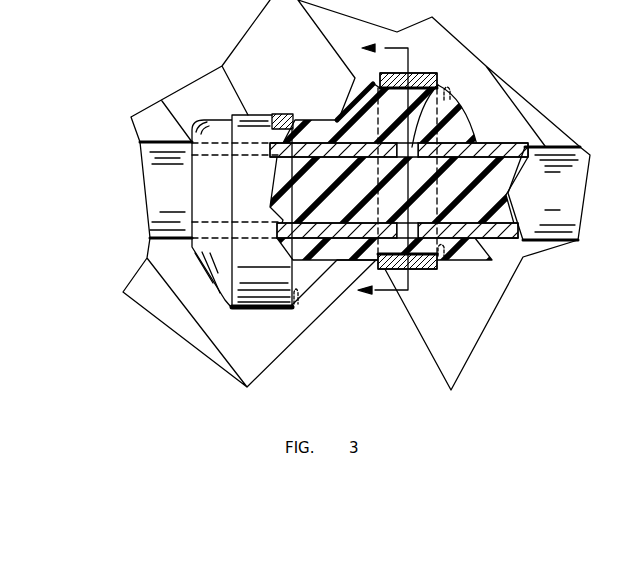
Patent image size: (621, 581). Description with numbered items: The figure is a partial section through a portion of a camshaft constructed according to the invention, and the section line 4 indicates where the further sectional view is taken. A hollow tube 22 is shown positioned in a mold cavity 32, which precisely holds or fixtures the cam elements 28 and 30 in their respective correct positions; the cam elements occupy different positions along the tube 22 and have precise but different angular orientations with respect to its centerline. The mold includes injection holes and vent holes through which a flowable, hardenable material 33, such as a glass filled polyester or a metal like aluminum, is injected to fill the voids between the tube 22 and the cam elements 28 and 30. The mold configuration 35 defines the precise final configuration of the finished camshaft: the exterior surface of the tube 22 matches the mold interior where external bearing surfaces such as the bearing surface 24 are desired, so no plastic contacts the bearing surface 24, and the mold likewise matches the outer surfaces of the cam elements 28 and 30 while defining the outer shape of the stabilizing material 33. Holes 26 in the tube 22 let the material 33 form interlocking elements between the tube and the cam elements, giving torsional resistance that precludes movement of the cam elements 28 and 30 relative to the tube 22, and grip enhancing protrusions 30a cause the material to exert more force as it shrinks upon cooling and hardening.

The tube 22 is at (153, 185).
The bearing surface 24 is at (570, 181).
The holes 26 is at (425, 115).
The cam element 28 is at (252, 114).
The cam element 30 is at (424, 73).
The grip enhancing protrusions 30a is at (440, 100).
The mold cavity 32 is at (286, 35).
The flowable, hardenable material 33 is at (323, 189).
The mold configuration 35 is at (162, 138).
The section line 4- 4 is at (374, 170).